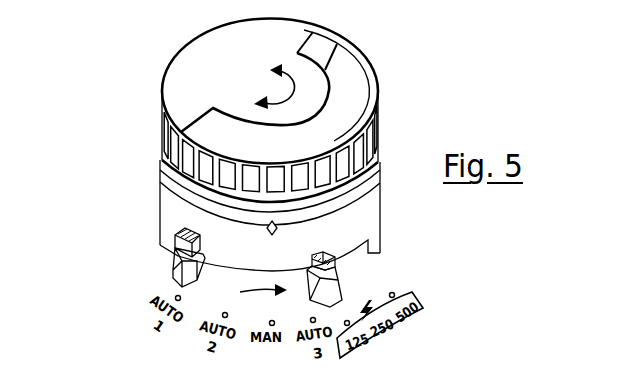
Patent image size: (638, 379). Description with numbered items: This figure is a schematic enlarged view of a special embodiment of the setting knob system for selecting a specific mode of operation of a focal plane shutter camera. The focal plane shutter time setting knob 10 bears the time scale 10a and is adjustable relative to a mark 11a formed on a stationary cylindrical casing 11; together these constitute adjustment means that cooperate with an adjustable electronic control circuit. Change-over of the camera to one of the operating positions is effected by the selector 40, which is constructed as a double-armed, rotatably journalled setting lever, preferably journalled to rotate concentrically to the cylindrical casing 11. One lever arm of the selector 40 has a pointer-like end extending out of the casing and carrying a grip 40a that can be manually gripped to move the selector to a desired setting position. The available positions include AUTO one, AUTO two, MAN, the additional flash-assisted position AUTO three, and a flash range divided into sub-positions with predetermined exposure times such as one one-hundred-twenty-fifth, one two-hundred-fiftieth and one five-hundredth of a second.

The focal plane shutter time setting knob 10 is at (266, 111).
The time scale 10a is at (178, 98).
The stationary cylindrical casing 11 is at (296, 233).
The mark 11a is at (267, 231).
The selector 40 is at (155, 253).
The grip 40a is at (178, 233).